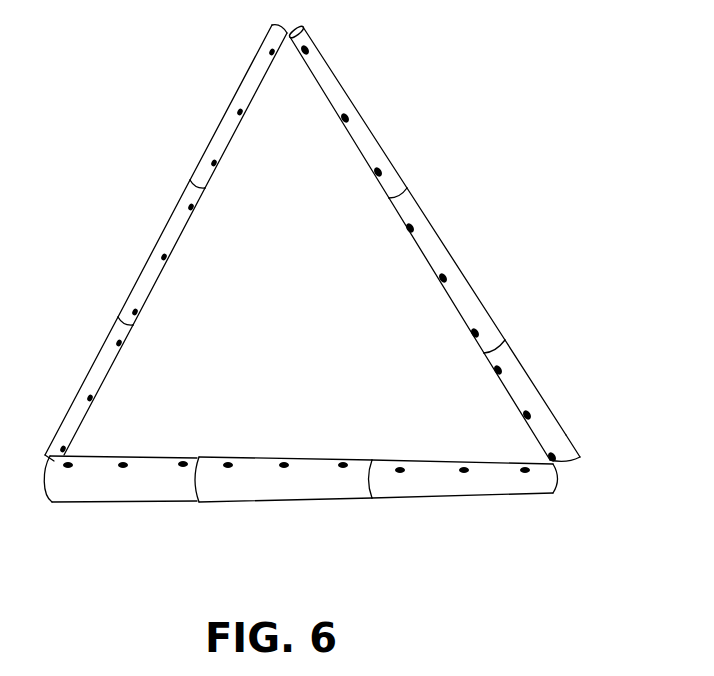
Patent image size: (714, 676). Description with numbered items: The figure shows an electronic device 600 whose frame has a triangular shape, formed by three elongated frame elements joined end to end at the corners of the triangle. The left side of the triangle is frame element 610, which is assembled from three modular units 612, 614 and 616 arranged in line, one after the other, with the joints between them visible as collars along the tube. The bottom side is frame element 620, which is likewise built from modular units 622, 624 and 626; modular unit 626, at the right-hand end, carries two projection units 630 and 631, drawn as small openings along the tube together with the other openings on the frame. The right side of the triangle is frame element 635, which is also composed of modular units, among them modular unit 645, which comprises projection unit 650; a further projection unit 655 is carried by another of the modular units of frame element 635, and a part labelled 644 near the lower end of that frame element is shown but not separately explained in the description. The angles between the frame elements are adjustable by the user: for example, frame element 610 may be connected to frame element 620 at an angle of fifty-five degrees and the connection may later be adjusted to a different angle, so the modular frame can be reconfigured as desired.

The triangular frame assembly 600 is at (333, 301).
The frame element 610 is at (156, 243).
The modular unit 612 is at (248, 70).
The modular unit 614 is at (139, 276).
The modular unit 616 is at (85, 380).
The frame element 620 is at (300, 520).
The modular unit 622 is at (116, 504).
The modular unit 624 is at (308, 503).
The modular unit 626 is at (465, 522).
The projection unit 630 is at (530, 473).
The projection unit 631 is at (465, 473).
The frame element 635 is at (464, 243).
The tube end 644 is at (556, 430).
The modular unit 645 is at (472, 290).
The projection unit 650 is at (405, 223).
The projection unit 655 is at (520, 410).